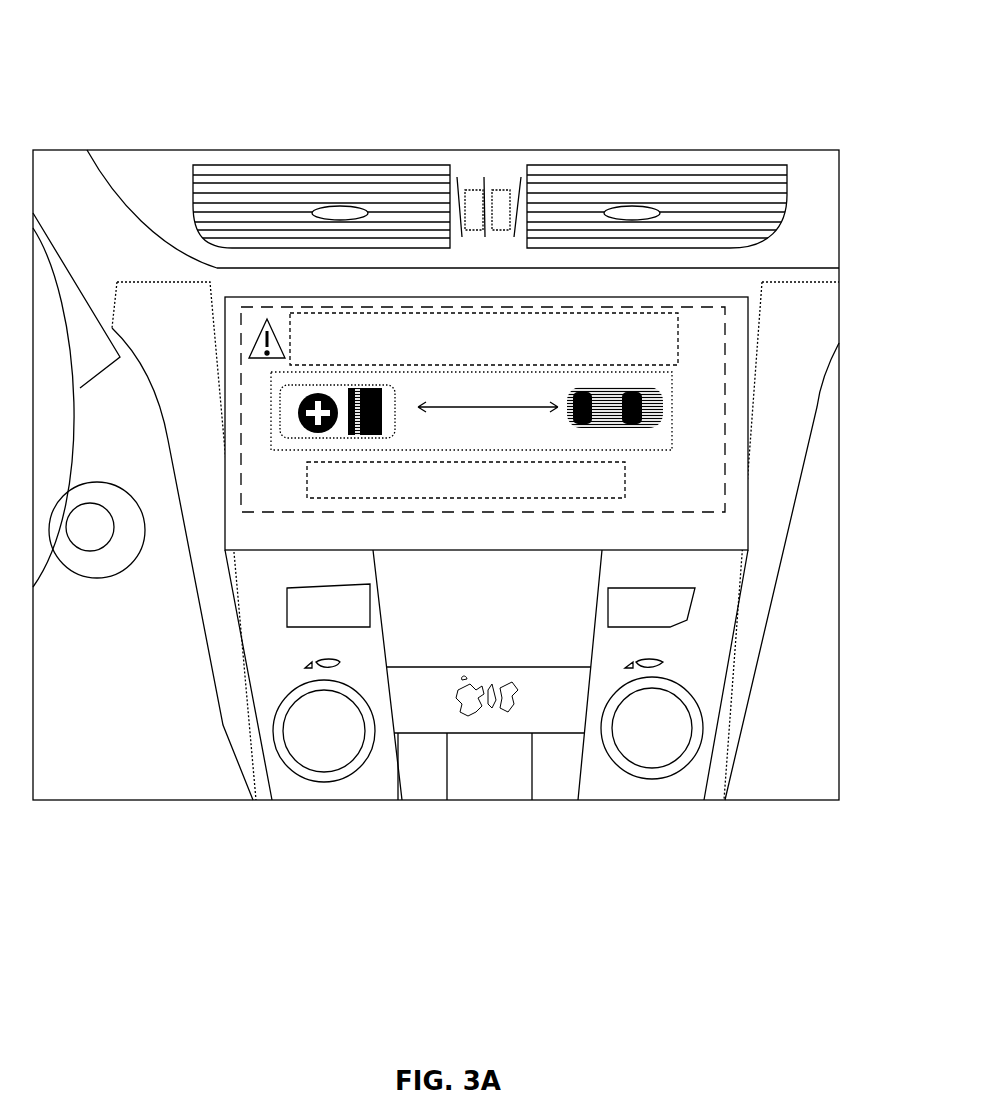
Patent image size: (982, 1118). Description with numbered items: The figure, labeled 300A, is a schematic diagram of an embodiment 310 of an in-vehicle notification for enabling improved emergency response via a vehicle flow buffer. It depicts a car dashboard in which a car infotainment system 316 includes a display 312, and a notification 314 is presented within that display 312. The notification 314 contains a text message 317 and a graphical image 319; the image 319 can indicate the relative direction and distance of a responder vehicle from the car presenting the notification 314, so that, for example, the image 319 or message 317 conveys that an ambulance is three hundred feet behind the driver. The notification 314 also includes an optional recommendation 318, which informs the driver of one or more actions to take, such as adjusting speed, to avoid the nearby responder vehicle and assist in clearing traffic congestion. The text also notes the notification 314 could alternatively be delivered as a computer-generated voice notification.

The example environment / scenario 300A is at (795, 31).
The embodiment 310 is at (184, 63).
The display 312 is at (470, 552).
The notification 314 is at (363, 512).
The car infotainment system 316 is at (401, 802).
The message 317 is at (678, 360).
The recommendation 318 is at (625, 490).
The graphical image 319 is at (701, 406).